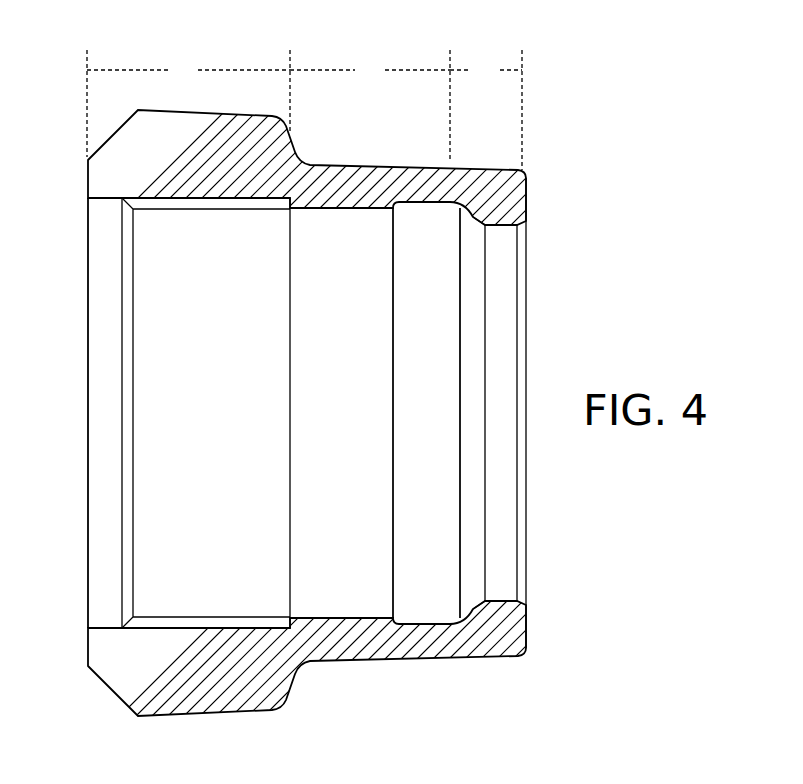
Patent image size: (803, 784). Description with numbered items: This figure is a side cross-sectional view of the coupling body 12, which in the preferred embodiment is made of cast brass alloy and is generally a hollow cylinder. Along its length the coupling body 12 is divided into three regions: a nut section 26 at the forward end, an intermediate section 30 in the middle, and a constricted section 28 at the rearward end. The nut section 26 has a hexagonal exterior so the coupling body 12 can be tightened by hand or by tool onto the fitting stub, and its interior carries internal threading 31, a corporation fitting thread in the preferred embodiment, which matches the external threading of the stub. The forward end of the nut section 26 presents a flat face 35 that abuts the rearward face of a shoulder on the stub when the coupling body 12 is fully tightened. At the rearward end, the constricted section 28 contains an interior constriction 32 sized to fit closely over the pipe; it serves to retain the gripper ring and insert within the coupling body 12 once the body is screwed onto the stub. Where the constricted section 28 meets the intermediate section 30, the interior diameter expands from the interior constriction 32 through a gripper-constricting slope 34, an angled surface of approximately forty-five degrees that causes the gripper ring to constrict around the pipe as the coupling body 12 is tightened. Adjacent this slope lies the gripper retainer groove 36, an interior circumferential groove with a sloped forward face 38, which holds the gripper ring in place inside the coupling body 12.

The coupling body 12 is at (552, 65).
The nut section 26 is at (188, 103).
The intermediate section 30 is at (370, 105).
The constricted section 28 is at (486, 110).
The flat face 35 is at (88, 178).
The internal threading 31 is at (162, 205).
The sloped forward face 38 is at (400, 210).
The gripper retainer groove 36 is at (430, 204).
The gripper-constricting slope 34 is at (470, 214).
The interior constriction 32 is at (503, 212).